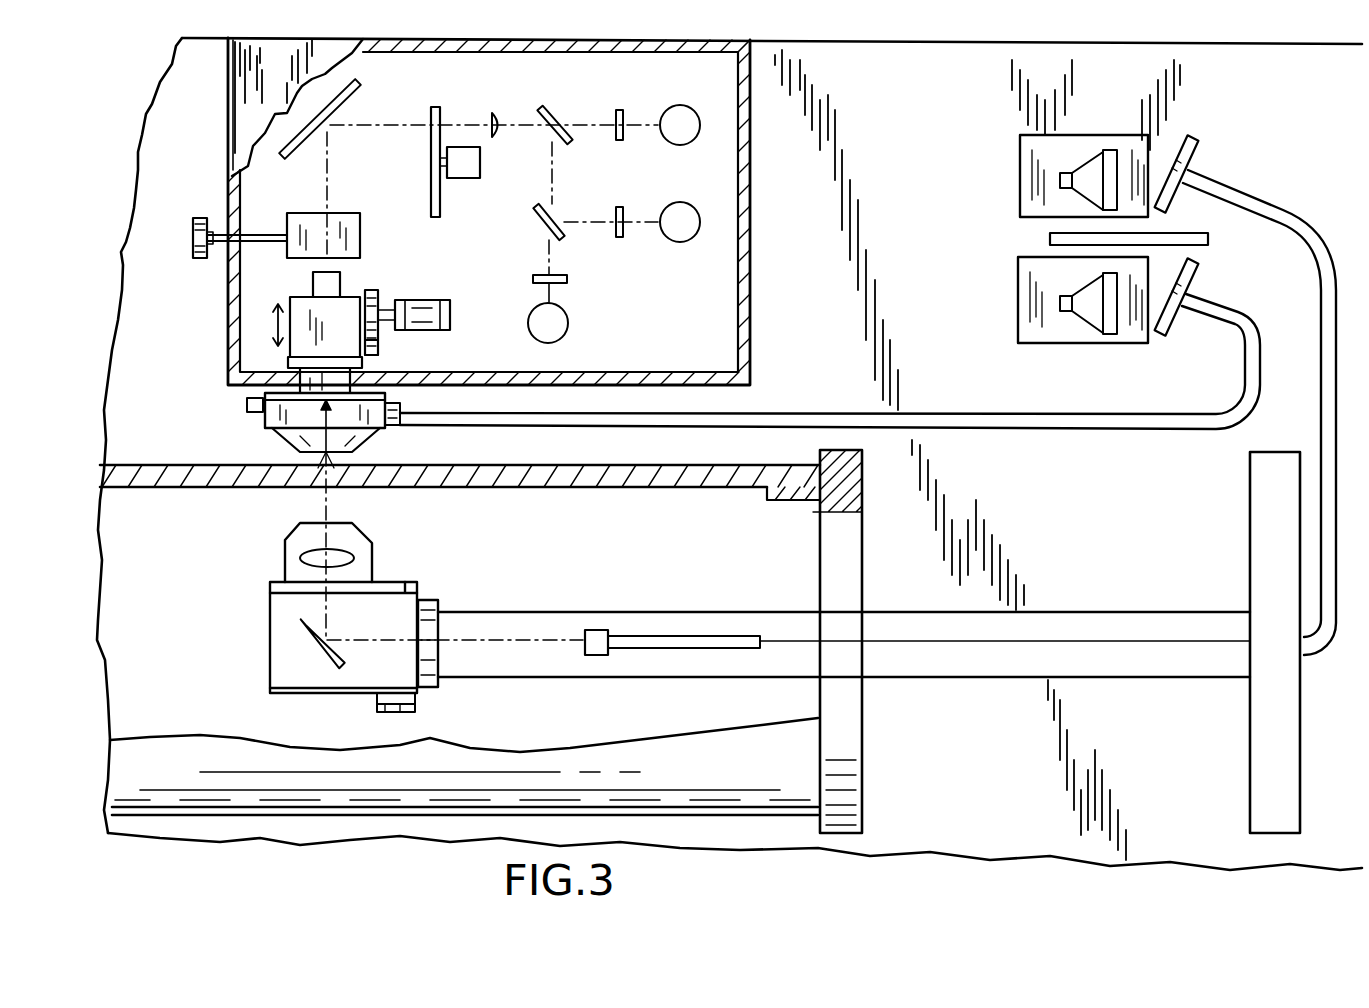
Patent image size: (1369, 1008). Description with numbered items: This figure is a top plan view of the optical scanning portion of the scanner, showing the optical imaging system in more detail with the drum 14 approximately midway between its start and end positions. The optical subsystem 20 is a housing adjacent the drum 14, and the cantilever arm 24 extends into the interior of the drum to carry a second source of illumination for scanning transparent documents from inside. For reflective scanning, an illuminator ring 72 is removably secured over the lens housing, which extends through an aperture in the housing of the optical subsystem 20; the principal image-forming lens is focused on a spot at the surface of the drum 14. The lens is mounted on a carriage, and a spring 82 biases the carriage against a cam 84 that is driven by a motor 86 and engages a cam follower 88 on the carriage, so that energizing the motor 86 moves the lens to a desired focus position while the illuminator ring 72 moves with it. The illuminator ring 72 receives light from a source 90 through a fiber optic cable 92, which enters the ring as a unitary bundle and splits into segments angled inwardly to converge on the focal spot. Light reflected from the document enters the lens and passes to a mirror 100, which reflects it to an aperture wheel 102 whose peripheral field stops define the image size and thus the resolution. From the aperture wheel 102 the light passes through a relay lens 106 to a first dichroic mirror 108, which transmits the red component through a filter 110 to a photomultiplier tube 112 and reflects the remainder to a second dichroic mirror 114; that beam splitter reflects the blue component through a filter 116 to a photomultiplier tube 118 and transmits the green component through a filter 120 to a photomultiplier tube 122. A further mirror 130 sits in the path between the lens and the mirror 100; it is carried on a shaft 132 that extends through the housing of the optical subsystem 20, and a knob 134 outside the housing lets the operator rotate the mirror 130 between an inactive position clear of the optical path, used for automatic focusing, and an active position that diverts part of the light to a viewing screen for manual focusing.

The drum 14 is at (166, 468).
The optical subsystem 20 is at (228, 330).
The cantilever arm 24 is at (1072, 612).
The illuminator ring 72 is at (266, 430).
The spring 82 is at (300, 316).
The cam 84 is at (374, 290).
The motor 86 is at (430, 300).
The cam follower 88 is at (380, 346).
The source 90 is at (1092, 343).
The fiber optic cable 92 is at (963, 413).
The mirror 100 is at (360, 84).
The aperture wheel 102 is at (438, 107).
The relay lens 106 is at (498, 116).
The dichroic mirror 108 is at (556, 110).
The filter 110 is at (621, 110).
The photomultiplier tube 112 is at (688, 106).
The dichroic mirror 114 is at (538, 221).
The filter 116 is at (619, 238).
The photomultiplier tube 118 is at (673, 242).
The filter 120 is at (567, 281).
The photomultiplier tube 122 is at (568, 322).
The mirror 130 is at (346, 213).
The shaft 132 is at (262, 234).
The knob 134 is at (198, 216).